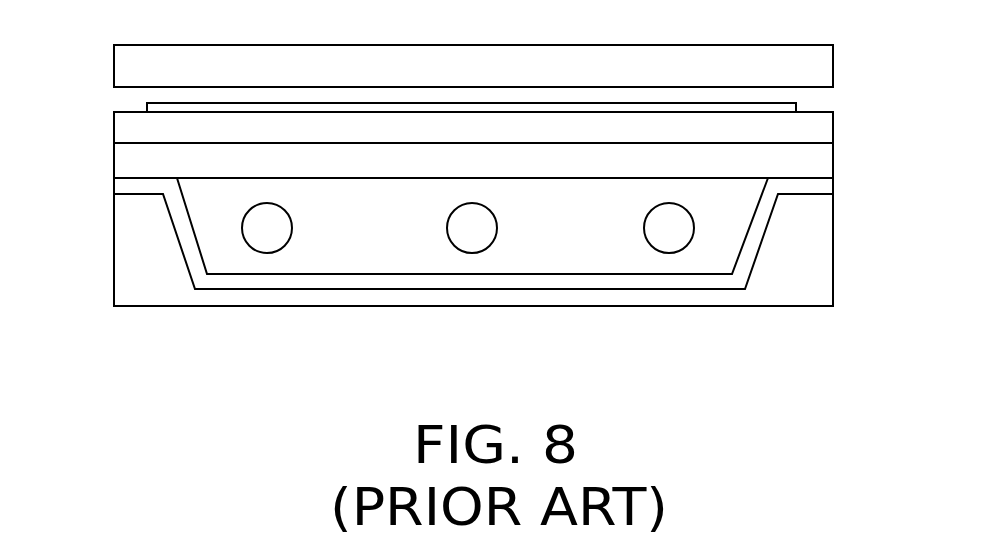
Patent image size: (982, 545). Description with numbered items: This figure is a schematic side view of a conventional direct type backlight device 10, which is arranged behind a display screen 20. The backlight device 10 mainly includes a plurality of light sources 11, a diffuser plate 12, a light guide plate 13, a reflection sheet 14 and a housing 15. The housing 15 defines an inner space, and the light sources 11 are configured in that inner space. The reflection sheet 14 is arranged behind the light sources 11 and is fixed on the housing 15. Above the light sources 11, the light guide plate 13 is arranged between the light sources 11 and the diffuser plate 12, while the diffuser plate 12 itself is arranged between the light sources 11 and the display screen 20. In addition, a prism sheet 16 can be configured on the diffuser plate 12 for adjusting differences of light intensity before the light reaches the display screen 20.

The direct type backlight device 10 is at (868, 131).
The light sources 11 is at (265, 232).
The diffuser plate 12 is at (130, 125).
The light guide plate 13 is at (813, 172).
The reflection sheet 14 is at (815, 188).
The housing 15 is at (802, 263).
The prism sheet 16 is at (147, 104).
The display screen 20 is at (810, 71).